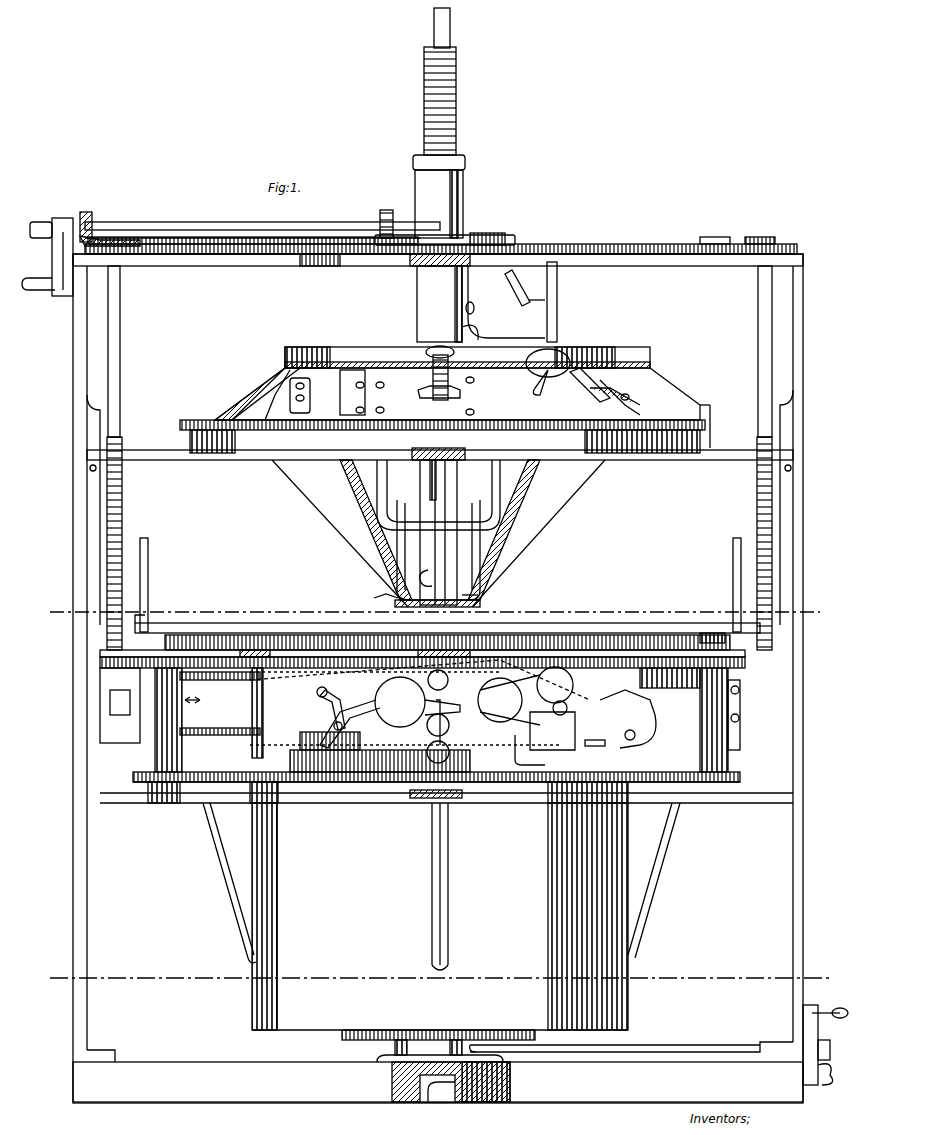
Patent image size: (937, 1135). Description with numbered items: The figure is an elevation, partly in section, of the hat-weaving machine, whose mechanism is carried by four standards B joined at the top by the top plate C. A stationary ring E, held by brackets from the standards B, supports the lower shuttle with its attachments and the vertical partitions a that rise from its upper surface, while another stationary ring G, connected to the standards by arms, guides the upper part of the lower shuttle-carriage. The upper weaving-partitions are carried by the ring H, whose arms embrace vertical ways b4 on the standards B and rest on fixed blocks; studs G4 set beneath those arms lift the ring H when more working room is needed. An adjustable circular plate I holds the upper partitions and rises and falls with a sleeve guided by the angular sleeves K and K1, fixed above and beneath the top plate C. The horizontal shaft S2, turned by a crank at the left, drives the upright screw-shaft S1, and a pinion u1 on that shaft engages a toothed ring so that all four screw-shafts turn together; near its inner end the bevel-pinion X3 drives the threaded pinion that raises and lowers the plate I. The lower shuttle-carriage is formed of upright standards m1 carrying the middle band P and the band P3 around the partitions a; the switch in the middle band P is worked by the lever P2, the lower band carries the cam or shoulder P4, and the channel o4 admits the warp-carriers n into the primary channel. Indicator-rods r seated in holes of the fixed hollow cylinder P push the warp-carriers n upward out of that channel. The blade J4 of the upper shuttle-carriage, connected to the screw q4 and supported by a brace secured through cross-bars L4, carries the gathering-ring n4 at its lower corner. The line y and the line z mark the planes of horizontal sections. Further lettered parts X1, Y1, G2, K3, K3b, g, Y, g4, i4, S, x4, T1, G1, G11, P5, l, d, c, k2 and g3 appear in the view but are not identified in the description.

The standards B is at (439, 678).
The top plate C is at (47, 257).
The bevel gear X1 is at (110, 223).
The horizontal shaft S2 is at (262, 222).
The rack Y1 is at (253, 236).
The pinion u1 is at (737, 234).
The bevel-pinion X3 is at (386, 217).
The angular sleeve K1 is at (445, 126).
The stationary ring G is at (438, 257).
The angular sleeve K is at (439, 304).
The bracket G2 is at (503, 303).
The lever arm / crank K3 is at (531, 302).
The lower crank K3b is at (825, 1045).
The adjustable circular plate I is at (467, 357).
The arm g is at (277, 387).
The cross-bars L4 is at (290, 395).
The upright standards m1 is at (477, 566).
The screw q4 is at (439, 376).
The table Y is at (445, 410).
The disk g4 is at (574, 375).
The link i4 is at (615, 384).
The ring H is at (440, 448).
The vertical ways b4 is at (442, 475).
The upright screw-shaft S1 is at (121, 543).
The screw shaft S is at (769, 543).
The studs G4 is at (448, 585).
The cone frame x4 is at (438, 533).
The blade J4 is at (434, 573).
The gathering-ring n4 is at (426, 587).
The section line y is at (439, 603).
The plate T1 is at (446, 620).
The rack G1 is at (422, 645).
The rack G11 is at (422, 665).
The stationary ring E is at (436, 787).
The middle band P is at (420, 788).
The guide line P5 is at (399, 703).
The cam or shoulder P4 is at (420, 680).
The band P3 is at (390, 703).
The lever P2 is at (526, 708).
The channel o4 is at (451, 716).
The gear train l is at (438, 706).
The bracket d is at (530, 751).
The cam c is at (628, 719).
The partitions a is at (375, 752).
The warp-carriers n is at (440, 929).
The indicator-rods r is at (441, 886).
The section line z is at (439, 971).
The plate k2 is at (615, 1042).
The bearing block g3 is at (443, 1071).